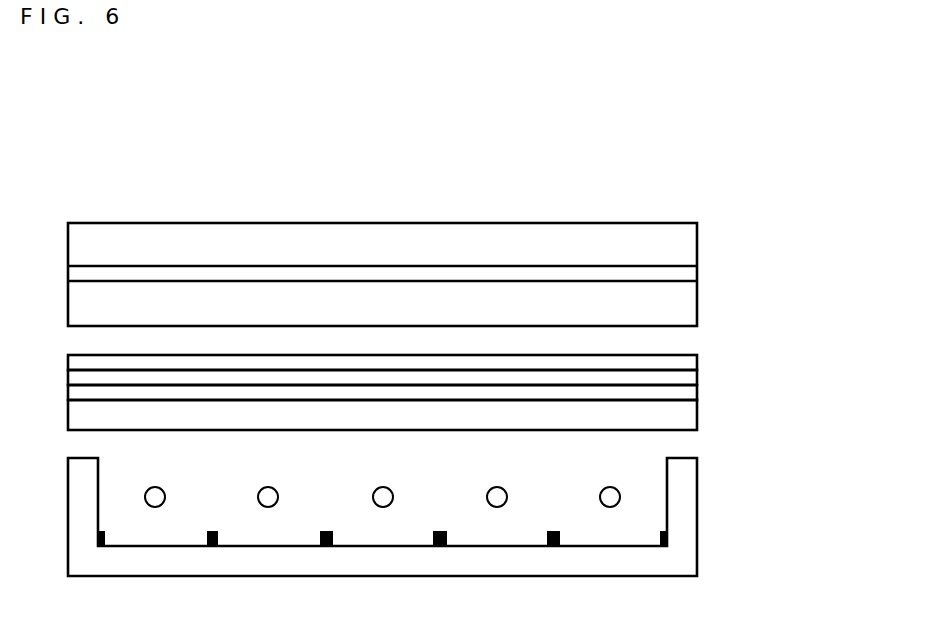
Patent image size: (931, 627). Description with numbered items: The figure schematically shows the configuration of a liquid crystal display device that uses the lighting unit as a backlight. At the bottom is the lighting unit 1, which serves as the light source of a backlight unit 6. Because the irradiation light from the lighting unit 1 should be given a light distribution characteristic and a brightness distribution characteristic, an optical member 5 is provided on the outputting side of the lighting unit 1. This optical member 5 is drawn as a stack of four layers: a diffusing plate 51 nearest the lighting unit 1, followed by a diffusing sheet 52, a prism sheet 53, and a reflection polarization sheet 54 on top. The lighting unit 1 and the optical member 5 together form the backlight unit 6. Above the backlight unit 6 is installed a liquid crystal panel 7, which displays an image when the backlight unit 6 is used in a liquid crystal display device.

The liquid crystal panel 7 is at (719, 269).
The backlight unit 6 is at (472, 451).
The optical member 5 is at (446, 379).
The reflection polarization sheet 54 is at (694, 363).
The prism sheet 53 is at (694, 378).
The diffusing sheet 52 is at (694, 396).
The diffusing plate 51 is at (424, 416).
The lighting unit 1 is at (447, 517).